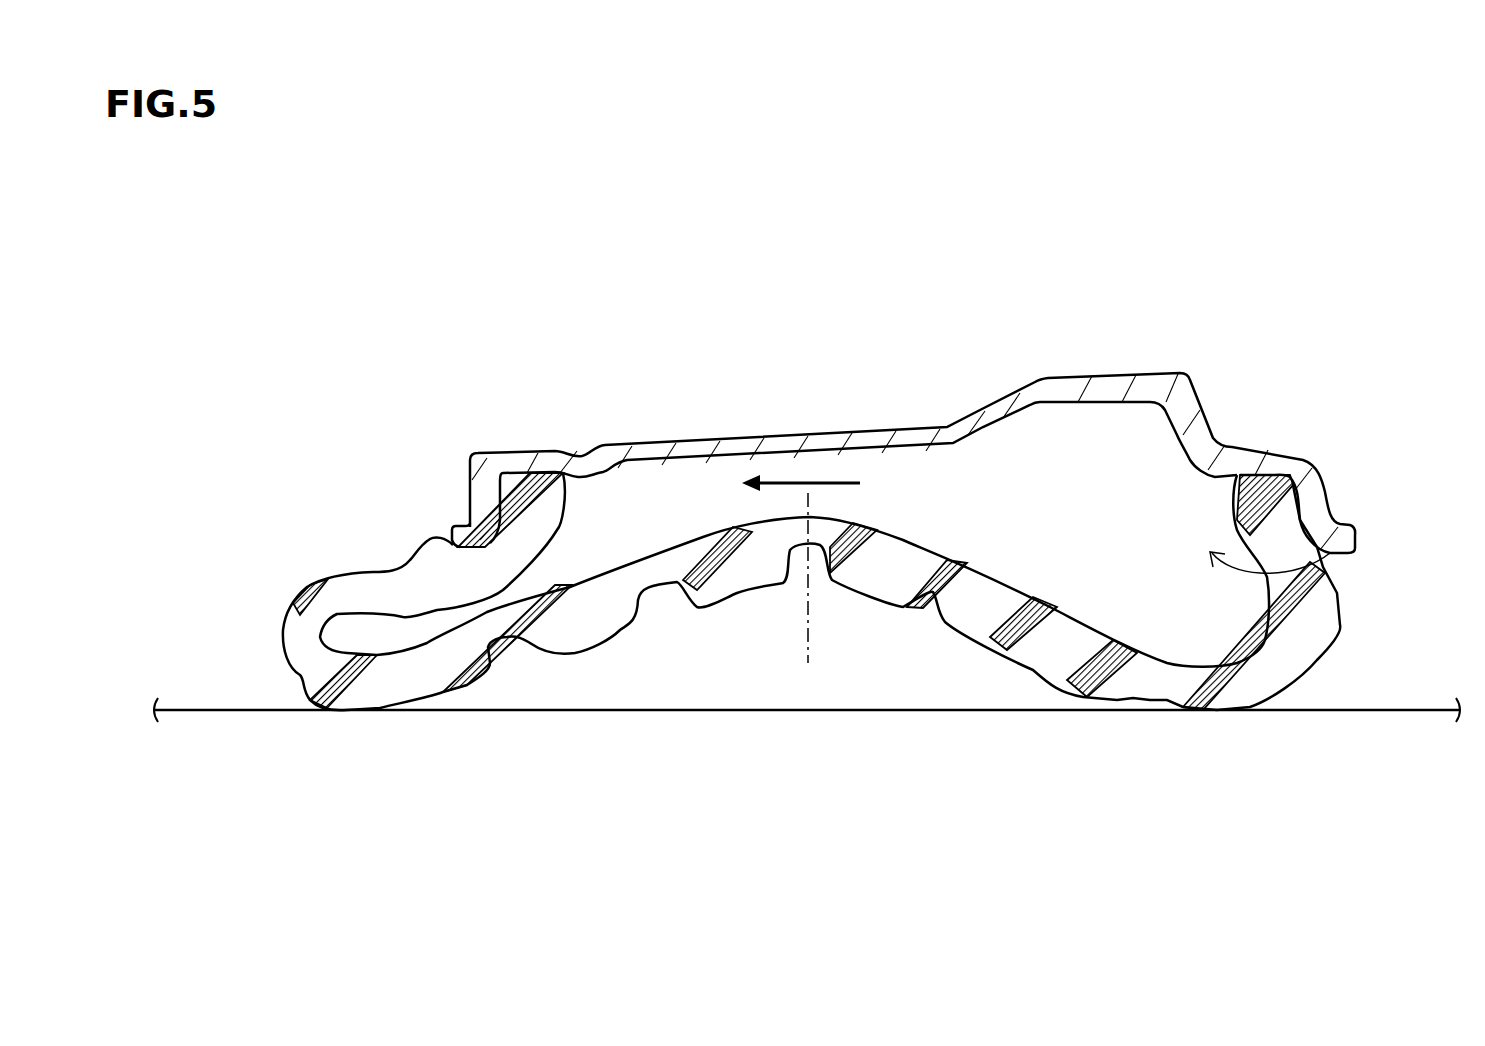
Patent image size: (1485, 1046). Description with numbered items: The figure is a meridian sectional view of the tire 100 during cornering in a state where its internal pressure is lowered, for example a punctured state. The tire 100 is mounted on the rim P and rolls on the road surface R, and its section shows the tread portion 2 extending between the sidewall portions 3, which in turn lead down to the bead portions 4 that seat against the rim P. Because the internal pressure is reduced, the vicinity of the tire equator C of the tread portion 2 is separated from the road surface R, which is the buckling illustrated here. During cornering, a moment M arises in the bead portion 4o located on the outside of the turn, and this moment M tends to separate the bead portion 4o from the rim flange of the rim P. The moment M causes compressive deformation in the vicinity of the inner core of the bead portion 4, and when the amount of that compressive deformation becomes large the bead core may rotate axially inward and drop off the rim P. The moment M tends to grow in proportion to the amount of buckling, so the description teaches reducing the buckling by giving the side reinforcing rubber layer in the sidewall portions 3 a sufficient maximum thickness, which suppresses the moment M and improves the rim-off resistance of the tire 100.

The tire 100 is at (811, 660).
The tread portion 2 is at (870, 597).
The sidewall portions 3 is at (305, 702).
The bead portion 4 is at (543, 468).
The bead portion located outside of cornering 4o is at (1264, 470).
The rim P is at (1102, 388).
The road surface R is at (218, 708).
The tire equator C is at (807, 643).
The moment M is at (1270, 576).